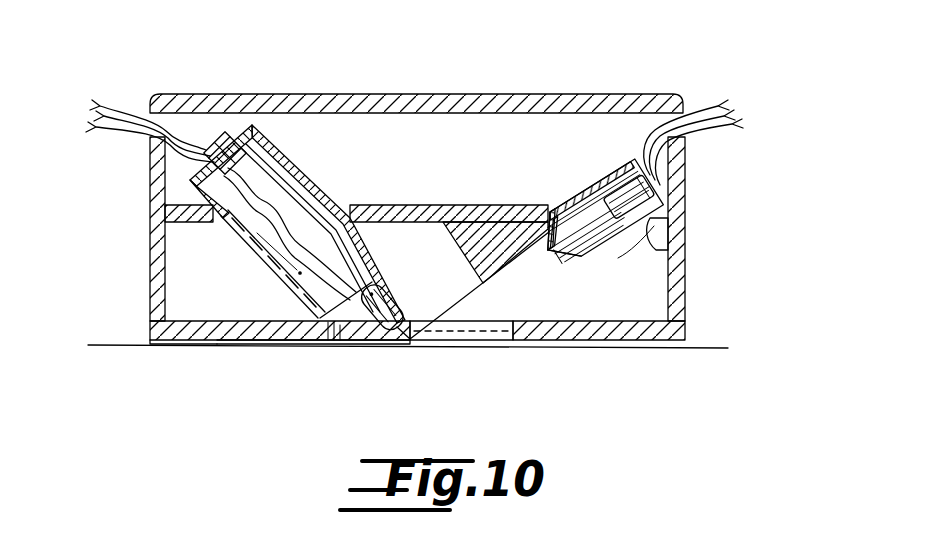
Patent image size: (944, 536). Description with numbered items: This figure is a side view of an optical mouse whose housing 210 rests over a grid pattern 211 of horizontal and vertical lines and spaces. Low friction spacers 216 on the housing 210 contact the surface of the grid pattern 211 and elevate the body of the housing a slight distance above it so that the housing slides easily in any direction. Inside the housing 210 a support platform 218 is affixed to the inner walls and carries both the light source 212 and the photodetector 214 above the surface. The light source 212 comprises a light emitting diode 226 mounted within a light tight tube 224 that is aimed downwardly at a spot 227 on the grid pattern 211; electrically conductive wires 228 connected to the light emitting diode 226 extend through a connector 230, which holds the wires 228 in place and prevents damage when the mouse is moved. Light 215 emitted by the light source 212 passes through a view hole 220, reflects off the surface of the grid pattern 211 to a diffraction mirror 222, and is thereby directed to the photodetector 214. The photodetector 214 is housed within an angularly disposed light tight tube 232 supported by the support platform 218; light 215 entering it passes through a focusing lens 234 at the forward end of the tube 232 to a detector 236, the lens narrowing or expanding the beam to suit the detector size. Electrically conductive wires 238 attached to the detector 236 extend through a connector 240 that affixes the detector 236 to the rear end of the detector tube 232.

The housing 210 is at (243, 97).
The grid pattern 211 is at (728, 348).
The light source 212 is at (278, 136).
The photodetector 214 is at (603, 178).
The light 215 is at (467, 302).
The spacers 216 is at (187, 345).
The support platform 218 is at (410, 207).
The view hole 220 is at (352, 340).
The diffraction mirror 222 is at (473, 207).
The light tight tube 224 is at (234, 237).
The light emitting diode 226 is at (392, 345).
The spot 227 is at (420, 342).
The electrically conductive wires 228 is at (128, 110).
The connector 230 is at (207, 157).
The light tight tube 232 is at (600, 252).
The focusing lens 234 is at (549, 234).
The detector 236 is at (668, 250).
The electrically conductive wires 238 is at (700, 103).
The connector 240 is at (688, 196).